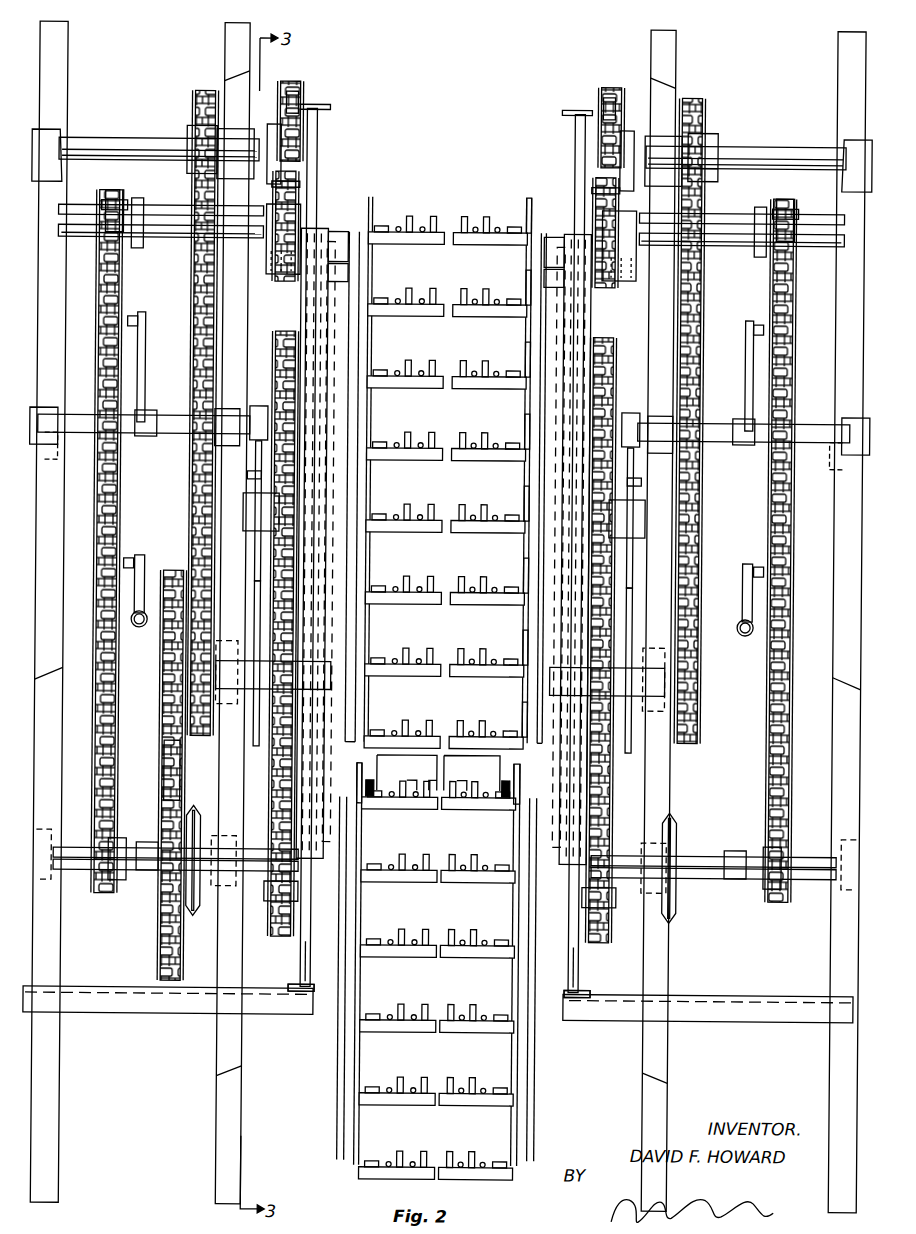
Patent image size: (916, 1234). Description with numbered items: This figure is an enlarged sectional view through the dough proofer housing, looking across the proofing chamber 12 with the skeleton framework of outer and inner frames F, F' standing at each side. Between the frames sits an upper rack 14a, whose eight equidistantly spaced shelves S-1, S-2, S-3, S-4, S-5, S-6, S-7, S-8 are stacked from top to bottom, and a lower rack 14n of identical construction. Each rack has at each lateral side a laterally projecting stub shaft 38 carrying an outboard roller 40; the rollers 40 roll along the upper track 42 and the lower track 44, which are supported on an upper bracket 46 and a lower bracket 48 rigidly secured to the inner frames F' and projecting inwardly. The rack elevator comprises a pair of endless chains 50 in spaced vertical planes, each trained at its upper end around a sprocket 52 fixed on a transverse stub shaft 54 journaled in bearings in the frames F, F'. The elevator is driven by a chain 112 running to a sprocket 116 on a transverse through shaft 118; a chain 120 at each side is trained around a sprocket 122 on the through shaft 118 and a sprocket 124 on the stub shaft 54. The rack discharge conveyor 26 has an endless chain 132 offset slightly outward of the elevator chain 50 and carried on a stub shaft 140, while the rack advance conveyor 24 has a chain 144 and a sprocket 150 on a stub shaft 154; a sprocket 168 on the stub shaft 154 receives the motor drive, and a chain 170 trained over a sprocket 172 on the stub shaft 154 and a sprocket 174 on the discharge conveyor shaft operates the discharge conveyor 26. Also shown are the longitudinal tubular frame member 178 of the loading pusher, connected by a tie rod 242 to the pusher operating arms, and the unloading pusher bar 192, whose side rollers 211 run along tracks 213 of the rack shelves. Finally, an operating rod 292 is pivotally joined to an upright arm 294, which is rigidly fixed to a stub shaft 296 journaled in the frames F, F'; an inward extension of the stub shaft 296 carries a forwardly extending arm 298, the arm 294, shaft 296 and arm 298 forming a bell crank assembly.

The outer frame F is at (448, 617).
The inner frame F' is at (447, 616).
The proofing chamber 12 is at (451, 658).
The rack 14a is at (466, 228).
The rack 14n is at (527, 1090).
The rack advance conveyor 24 is at (300, 935).
The rack discharge conveyor 26 is at (295, 188).
The stub shaft 38 is at (276, 262).
The roller 40 is at (316, 240).
The upper track 42 is at (330, 215).
The lower track 44 is at (302, 992).
The upper bracket 46 is at (62, 212).
The lower bracket 48 is at (270, 1014).
The endless chain 50 is at (300, 98).
The sprocket 52 is at (280, 130).
The stub shaft 54 is at (116, 138).
The chain 112 is at (165, 763).
The sprocket 116 is at (165, 695).
The through shaft 118 is at (258, 700).
The chain 120 is at (193, 474).
The sprocket 122 is at (222, 642).
The sprocket 124 is at (185, 135).
The endless chain 132 is at (290, 170).
The stub shaft 140 is at (165, 232).
The rack advance conveyor chain 144 is at (270, 905).
The sprocket 150 is at (272, 830).
The stub shaft 154 is at (150, 872).
The sprocket 168 is at (198, 805).
The chain 170 is at (120, 512).
The sprocket 172 is at (122, 840).
The sprocket 174 is at (135, 205).
The tubular frame member 178 is at (138, 627).
The pusher bar 192 is at (480, 782).
The roller 211 is at (360, 773).
The track 213 is at (374, 794).
The tie rod 242 is at (137, 556).
The operating rod 292 is at (135, 316).
The upright arm 294 is at (146, 372).
The stub shaft 296 is at (75, 413).
The arm 298 is at (262, 404).
The shelf S-1 is at (512, 215).
The shelf S-2 is at (511, 287).
The shelf S-3 is at (510, 359).
The shelf S-4 is at (510, 431).
The shelf S-5 is at (509, 503).
The shelf S-6 is at (508, 575).
The shelf S-7 is at (508, 647).
The shelf S-8 is at (507, 719).